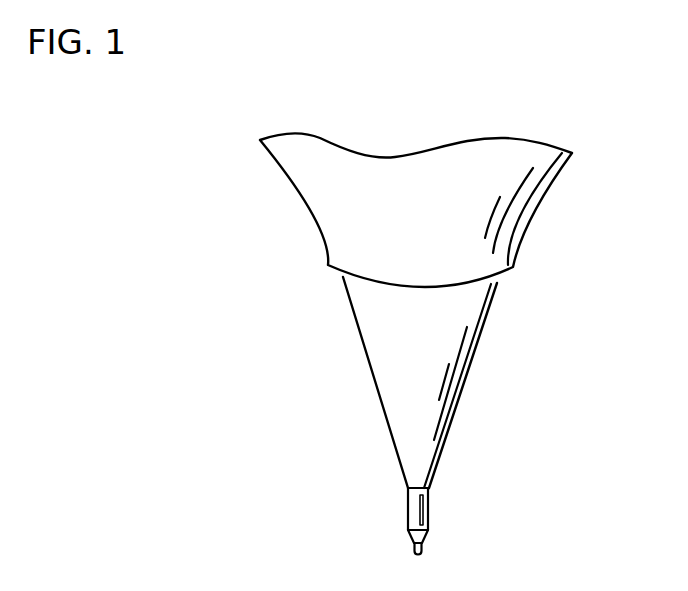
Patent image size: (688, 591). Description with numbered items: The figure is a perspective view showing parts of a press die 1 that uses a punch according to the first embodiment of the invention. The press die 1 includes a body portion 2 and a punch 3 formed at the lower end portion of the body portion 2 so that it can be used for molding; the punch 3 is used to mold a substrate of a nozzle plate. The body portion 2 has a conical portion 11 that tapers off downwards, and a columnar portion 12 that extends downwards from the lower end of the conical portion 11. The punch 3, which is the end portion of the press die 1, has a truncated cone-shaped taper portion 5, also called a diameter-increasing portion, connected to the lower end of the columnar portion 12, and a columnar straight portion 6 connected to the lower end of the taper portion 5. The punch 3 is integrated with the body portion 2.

The press die 1 is at (589, 195).
The body portion 2 is at (531, 335).
The conical portion 11 is at (466, 373).
The columnar portion 12 is at (428, 503).
The punch 3 is at (457, 529).
The taper portion 5 is at (424, 536).
The straight portion 6 is at (446, 541).